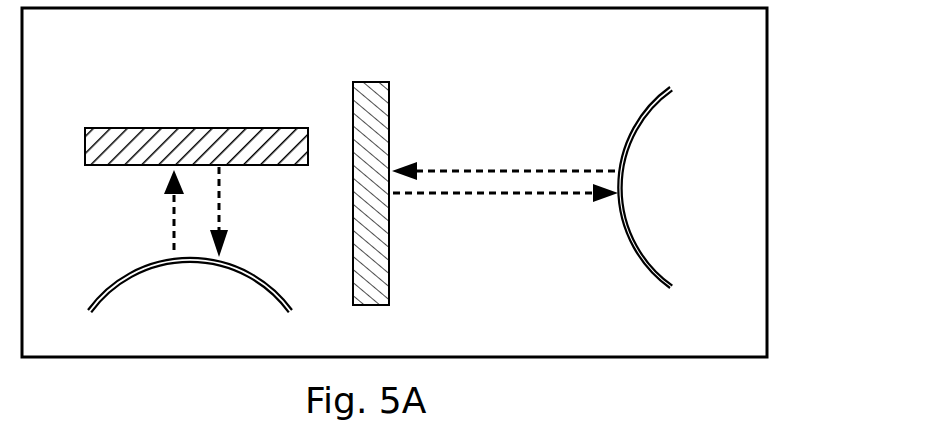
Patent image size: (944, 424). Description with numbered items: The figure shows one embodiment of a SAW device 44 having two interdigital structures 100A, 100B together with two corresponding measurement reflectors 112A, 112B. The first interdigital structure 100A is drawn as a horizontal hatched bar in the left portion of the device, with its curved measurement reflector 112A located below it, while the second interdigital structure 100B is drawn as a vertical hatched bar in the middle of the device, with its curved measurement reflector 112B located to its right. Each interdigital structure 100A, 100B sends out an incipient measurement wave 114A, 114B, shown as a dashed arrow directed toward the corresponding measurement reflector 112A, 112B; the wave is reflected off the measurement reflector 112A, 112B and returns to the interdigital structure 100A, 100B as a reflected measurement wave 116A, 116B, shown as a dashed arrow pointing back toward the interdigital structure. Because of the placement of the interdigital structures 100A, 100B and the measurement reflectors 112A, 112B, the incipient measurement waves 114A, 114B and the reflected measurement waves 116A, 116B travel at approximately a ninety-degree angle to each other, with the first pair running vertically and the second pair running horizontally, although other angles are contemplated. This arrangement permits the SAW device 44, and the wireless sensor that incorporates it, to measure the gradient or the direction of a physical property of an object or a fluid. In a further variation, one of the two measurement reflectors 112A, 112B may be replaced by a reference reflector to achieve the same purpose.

The SAW device 44 is at (792, 166).
The interdigital structure 100A is at (198, 125).
The interdigital structure 100B is at (372, 80).
The measurement reflector 112A is at (150, 275).
The measurement reflector 112B is at (650, 98).
The incipient measurement wave 114A is at (222, 205).
The incipient measurement wave 114B is at (476, 195).
The reflected measurement wave 116A is at (173, 218).
The reflected measurement wave 116B is at (537, 170).